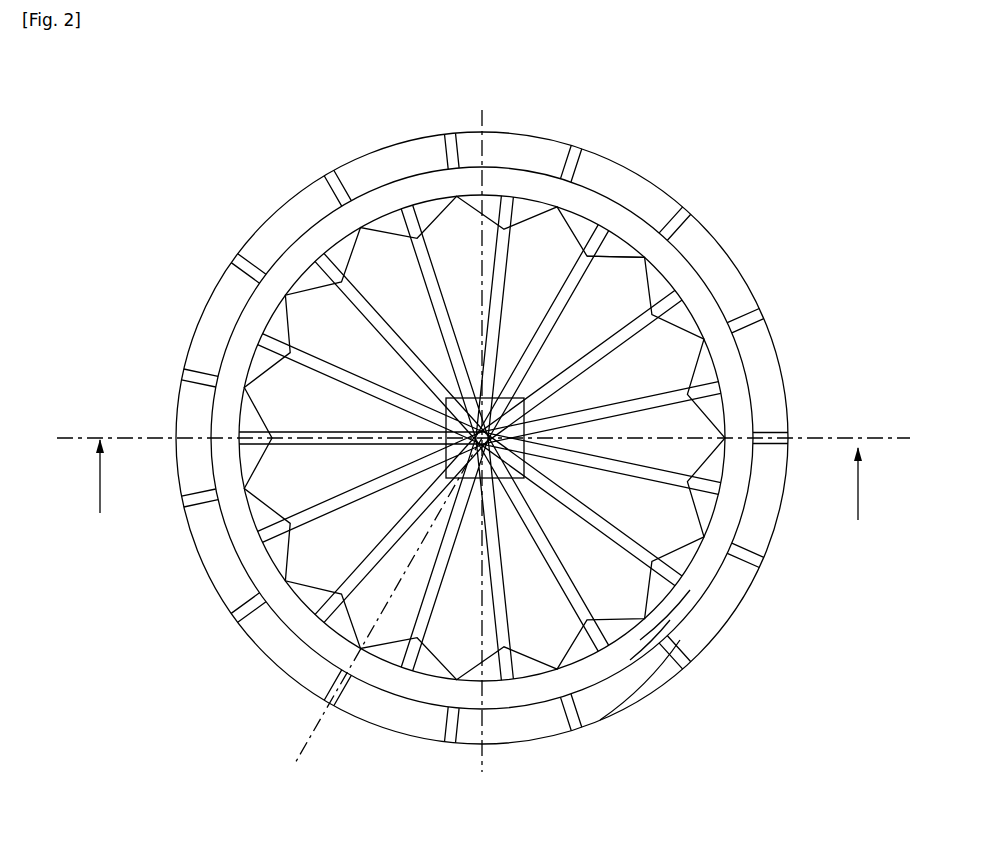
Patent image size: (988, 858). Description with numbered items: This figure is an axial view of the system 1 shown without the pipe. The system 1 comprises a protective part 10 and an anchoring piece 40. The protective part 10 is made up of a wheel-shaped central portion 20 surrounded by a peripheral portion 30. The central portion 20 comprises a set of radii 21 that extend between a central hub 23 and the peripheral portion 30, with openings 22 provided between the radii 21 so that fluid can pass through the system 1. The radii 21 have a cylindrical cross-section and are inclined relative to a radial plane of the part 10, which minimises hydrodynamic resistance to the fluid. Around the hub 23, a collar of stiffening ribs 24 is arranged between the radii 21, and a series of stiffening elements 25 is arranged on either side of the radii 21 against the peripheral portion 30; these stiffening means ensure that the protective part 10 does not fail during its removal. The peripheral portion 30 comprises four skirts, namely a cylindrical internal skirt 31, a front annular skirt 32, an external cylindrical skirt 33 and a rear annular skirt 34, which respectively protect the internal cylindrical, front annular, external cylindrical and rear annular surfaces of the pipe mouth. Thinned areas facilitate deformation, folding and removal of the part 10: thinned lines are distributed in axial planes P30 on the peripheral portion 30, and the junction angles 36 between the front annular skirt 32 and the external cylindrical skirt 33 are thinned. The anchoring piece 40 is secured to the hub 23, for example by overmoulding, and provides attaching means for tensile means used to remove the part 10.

The system 1 is at (213, 162).
The protective part 10 is at (187, 287).
The central portion 20 is at (537, 293).
The radii 21 is at (582, 266).
The openings 22 is at (590, 311).
The central hub 23 is at (528, 405).
The stiffening ribs 24 is at (535, 415).
The stiffening elements 25 is at (713, 510).
The peripheral portion 30 is at (197, 622).
The cylindrical internal skirt 31 is at (662, 614).
The front annular skirt 32 is at (647, 645).
The external cylindrical skirt 33 is at (641, 714).
The rear annular skirt 34 is at (596, 707).
The junction angles 36 is at (324, 709).
The anchoring piece 40 is at (455, 428).
The axial planes P30 is at (375, 613).